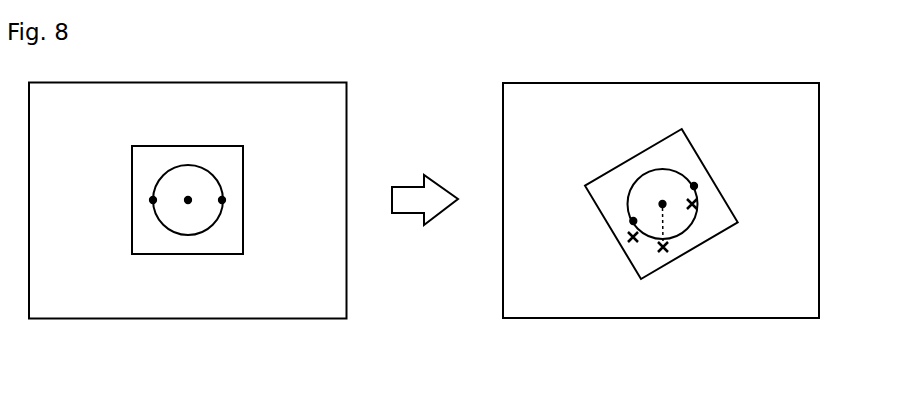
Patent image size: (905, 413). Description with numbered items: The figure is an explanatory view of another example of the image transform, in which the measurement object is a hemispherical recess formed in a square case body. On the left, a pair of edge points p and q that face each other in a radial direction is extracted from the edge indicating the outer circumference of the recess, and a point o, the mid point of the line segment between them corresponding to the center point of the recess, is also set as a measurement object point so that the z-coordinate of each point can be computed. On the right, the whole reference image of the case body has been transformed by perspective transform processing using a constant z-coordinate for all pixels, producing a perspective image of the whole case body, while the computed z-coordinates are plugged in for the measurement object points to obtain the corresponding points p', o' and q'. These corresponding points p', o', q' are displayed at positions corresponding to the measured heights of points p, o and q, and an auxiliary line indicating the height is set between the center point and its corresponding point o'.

The edge point p is at (131, 286).
The point o is at (184, 286).
The edge point q is at (245, 286).
The corresponding point p' is at (642, 303).
The corresponding point o' is at (765, 255).
The corresponding point q' is at (779, 210).